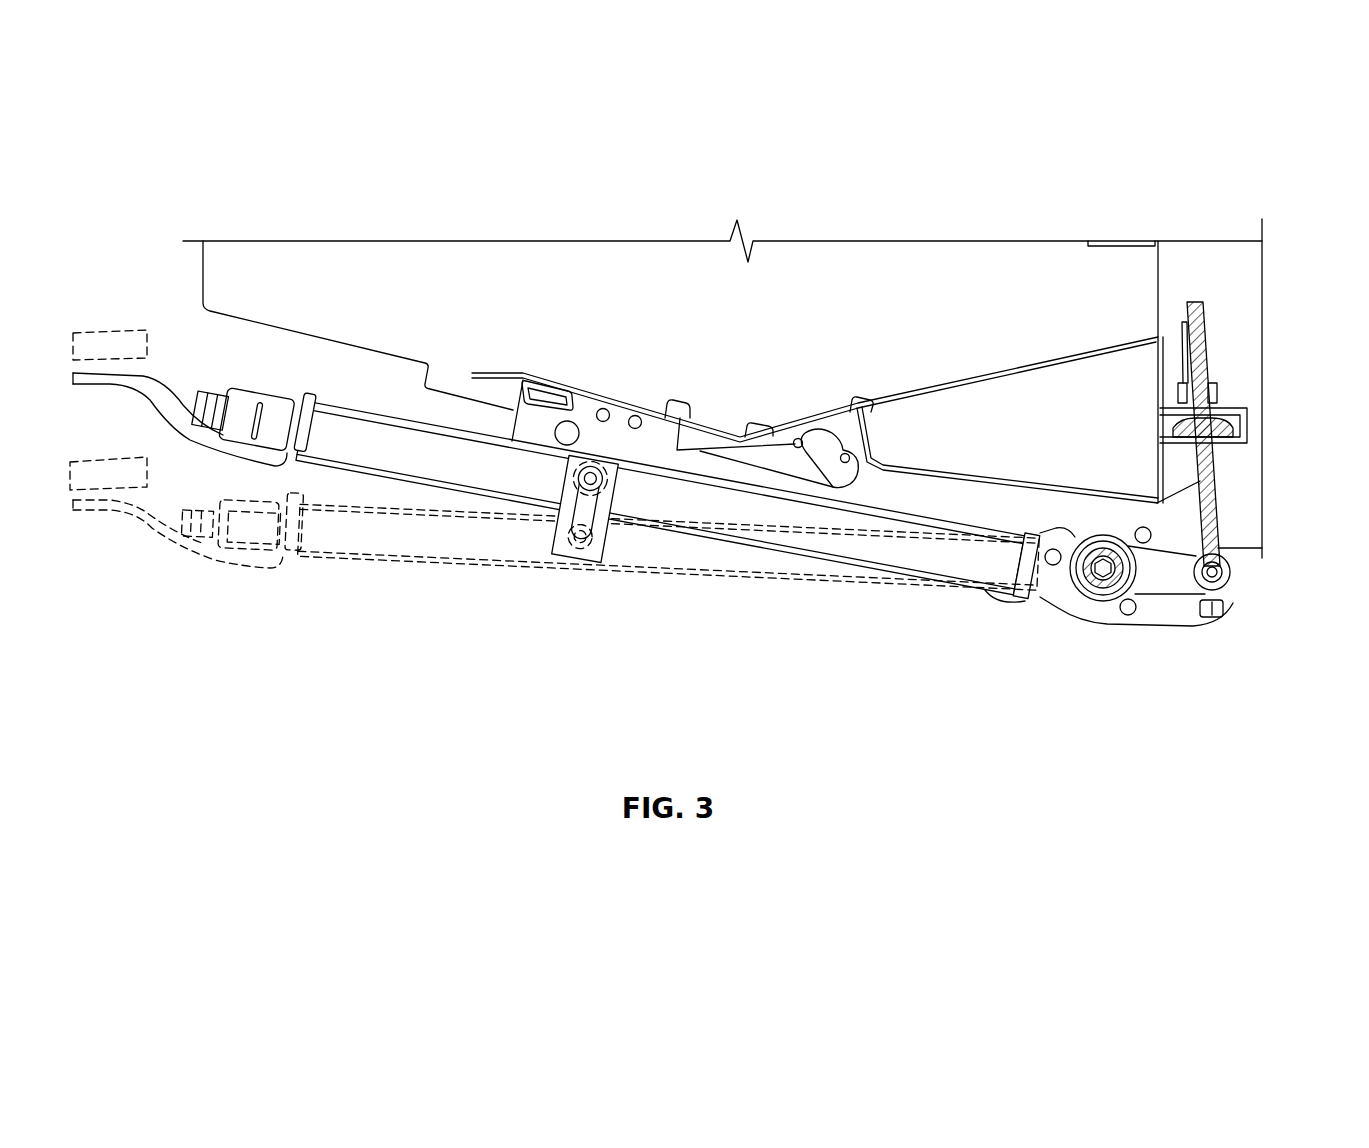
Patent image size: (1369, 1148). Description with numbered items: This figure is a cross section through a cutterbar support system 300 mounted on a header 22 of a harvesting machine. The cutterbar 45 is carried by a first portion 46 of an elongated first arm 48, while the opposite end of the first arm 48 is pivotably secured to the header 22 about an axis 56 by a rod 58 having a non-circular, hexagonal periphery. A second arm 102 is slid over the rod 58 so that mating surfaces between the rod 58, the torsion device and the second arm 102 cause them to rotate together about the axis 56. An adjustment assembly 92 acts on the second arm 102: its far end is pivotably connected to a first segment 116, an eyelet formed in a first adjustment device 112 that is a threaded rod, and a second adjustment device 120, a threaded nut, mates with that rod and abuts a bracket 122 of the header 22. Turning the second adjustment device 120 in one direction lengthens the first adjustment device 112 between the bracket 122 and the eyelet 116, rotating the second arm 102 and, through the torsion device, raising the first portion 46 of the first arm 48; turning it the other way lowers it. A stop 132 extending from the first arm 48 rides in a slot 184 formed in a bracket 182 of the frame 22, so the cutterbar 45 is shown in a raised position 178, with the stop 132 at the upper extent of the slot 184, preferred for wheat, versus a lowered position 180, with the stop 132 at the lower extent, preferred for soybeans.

The header 22 is at (786, 316).
The cutterbar 45 is at (110, 333).
The first portion 46 is at (190, 440).
The first arm 48 is at (337, 452).
The axis 56 is at (1103, 568).
The rod 58 is at (1062, 588).
The adjustment assembly 92 is at (1142, 612).
The second arm 102 is at (1153, 583).
The first adjustment device 112 is at (1208, 492).
The first segment 116 is at (1218, 572).
The second adjustment device 120 is at (1254, 403).
The bracket 122 is at (1240, 425).
The stop 132 is at (612, 483).
The raised position 178 is at (67, 382).
The lowered position 180 is at (67, 507).
The bracket 182 is at (577, 541).
The slot 184 is at (553, 527).
The cutterbar support system 300 is at (694, 495).